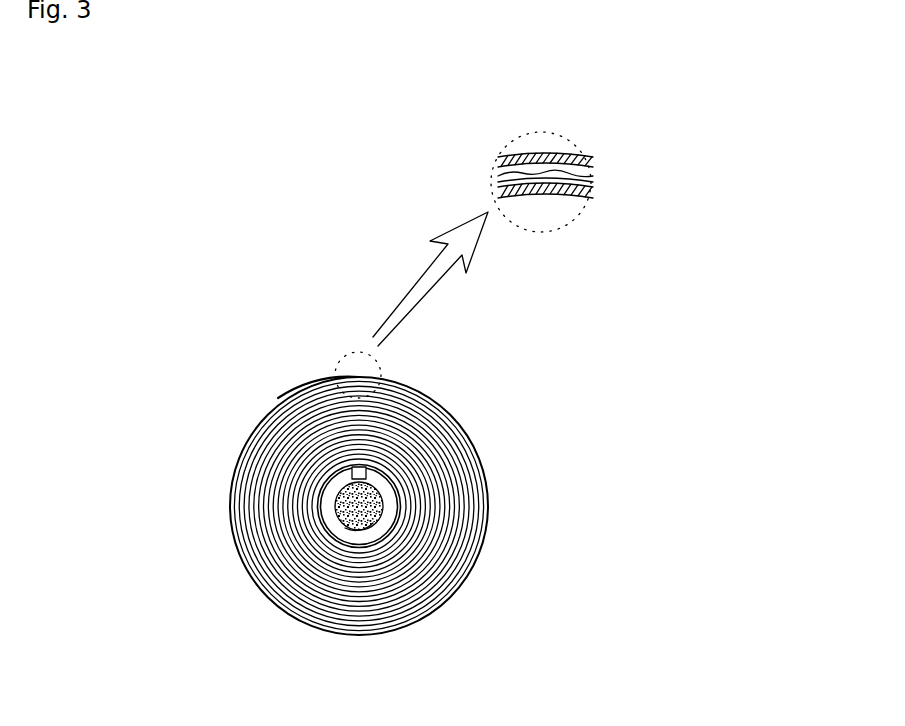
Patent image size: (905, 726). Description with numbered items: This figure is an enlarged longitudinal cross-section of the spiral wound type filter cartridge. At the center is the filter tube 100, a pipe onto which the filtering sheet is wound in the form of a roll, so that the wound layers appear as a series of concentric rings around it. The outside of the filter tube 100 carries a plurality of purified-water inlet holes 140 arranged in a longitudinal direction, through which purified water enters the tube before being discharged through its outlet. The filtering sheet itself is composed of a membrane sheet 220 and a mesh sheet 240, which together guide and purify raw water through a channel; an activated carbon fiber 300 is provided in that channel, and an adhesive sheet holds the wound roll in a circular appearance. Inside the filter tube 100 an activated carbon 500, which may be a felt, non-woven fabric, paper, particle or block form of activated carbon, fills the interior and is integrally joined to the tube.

The filter tube 100 is at (338, 523).
The purified-water inlet holes 140 is at (330, 484).
The membrane sheet 220 is at (593, 198).
The mesh sheet 240 is at (593, 165).
The activated carbon fiber 300 is at (557, 175).
The activated carbon 500 is at (373, 523).